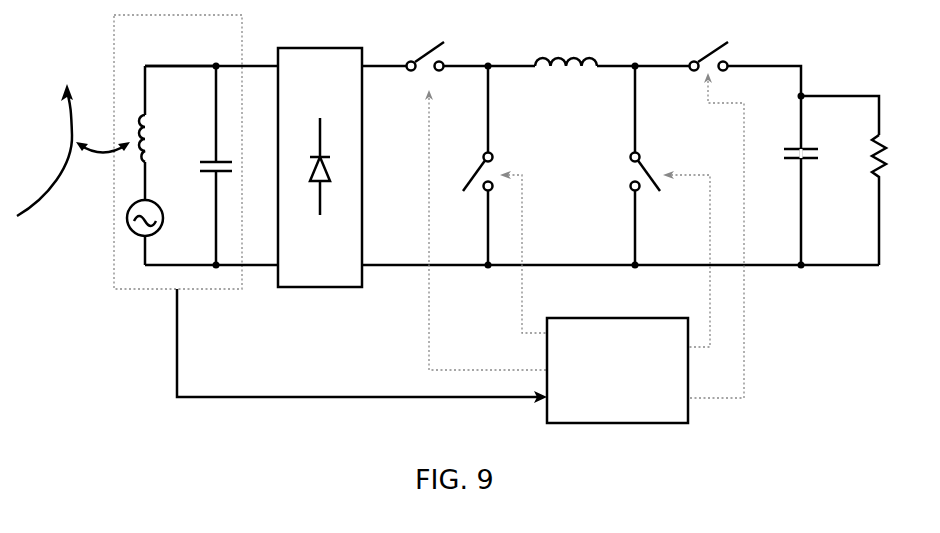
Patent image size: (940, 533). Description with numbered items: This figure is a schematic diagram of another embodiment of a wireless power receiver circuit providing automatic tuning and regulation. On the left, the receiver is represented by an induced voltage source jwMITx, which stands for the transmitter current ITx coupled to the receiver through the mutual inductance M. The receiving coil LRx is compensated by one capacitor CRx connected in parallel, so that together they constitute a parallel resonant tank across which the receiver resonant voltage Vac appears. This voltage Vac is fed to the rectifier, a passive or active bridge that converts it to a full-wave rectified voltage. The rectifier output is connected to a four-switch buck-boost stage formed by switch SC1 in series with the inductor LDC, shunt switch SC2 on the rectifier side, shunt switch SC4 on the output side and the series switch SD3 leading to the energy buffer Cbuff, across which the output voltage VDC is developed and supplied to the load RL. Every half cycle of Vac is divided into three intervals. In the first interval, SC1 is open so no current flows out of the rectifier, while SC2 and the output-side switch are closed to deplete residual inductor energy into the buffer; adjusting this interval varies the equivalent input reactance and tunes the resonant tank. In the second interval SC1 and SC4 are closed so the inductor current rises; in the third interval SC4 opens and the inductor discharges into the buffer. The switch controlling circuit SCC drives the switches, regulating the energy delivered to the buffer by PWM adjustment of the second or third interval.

The receiver resonant voltage Vac is at (180, 54).
The receiving coil LRx is at (125, 129).
The capacitor CRx is at (207, 165).
The induced voltage source jwMITx is at (118, 230).
The transmitter current ITx is at (45, 150).
The mutual inductance M is at (103, 162).
The element rectifier is at (320, 167).
The switch SC1 is at (477, 194).
The switch SC2 is at (495, 199).
The switch SC4 is at (652, 206).
The switch SD3 is at (709, 213).
The inductor LDC is at (566, 47).
The energy buffer Cbuff is at (784, 142).
The DC output voltage VDC is at (840, 104).
The load resistor RL is at (863, 200).
The switch controlling circuit SCC is at (432, 356).